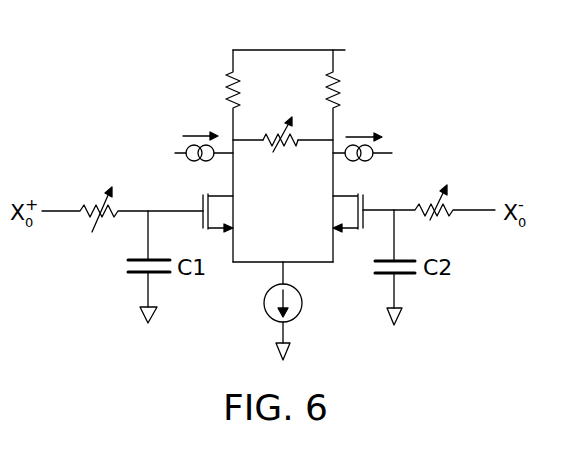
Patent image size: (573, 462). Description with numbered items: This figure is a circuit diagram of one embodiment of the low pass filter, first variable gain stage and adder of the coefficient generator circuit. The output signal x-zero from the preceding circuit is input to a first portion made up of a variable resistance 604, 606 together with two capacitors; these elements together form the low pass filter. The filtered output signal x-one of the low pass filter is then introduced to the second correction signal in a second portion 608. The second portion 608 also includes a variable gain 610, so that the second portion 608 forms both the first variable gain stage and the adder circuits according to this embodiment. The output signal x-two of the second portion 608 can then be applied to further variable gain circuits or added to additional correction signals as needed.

The variable resistance 604 is at (122, 225).
The variable resistance 606 is at (429, 220).
The second portion 608 is at (410, 87).
The variable gain 610 is at (294, 149).